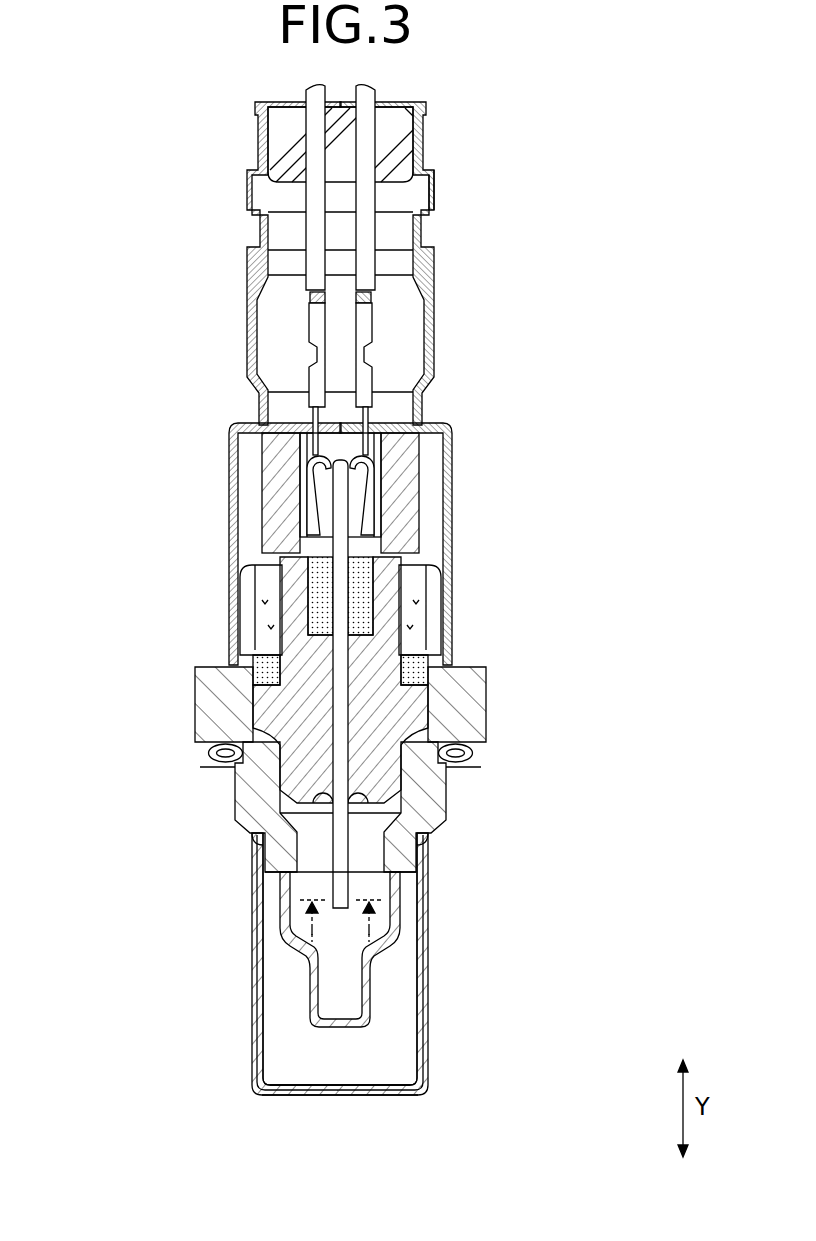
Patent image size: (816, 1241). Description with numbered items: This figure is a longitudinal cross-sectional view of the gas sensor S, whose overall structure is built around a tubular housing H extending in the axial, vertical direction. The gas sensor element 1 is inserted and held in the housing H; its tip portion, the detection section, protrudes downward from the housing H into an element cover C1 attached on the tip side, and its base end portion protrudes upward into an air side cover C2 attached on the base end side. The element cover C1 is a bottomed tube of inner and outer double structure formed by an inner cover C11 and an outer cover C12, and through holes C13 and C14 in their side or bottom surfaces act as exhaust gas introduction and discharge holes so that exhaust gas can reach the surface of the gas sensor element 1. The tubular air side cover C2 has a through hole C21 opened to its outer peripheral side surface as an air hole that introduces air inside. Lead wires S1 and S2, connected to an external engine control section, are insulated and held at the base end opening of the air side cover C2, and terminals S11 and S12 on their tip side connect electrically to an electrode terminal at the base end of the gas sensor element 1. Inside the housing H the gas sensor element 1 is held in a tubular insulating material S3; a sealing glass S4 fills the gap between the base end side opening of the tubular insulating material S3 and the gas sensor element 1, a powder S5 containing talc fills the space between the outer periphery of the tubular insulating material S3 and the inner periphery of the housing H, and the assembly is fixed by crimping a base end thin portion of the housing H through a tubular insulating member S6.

The gas sensor element 1 is at (340, 857).
The gas sensor S is at (483, 298).
The lead wire S1 is at (320, 188).
The lead wire S2 is at (363, 262).
The tubular insulating material S3 is at (305, 688).
The sealing glass S4 is at (360, 580).
The powder S5 is at (415, 678).
The tubular insulating member S6 is at (430, 605).
The terminal S11 is at (313, 483).
The spring contact terminal S12 is at (362, 505).
The housing H is at (470, 705).
The element cover C1 is at (572, 972).
The inner cover C11 is at (427, 980).
The outer cover C12 is at (427, 1017).
The through hole C13 is at (343, 1023).
The through hole C14 is at (283, 1093).
The air side cover C2 is at (432, 330).
The through hole C21 is at (434, 183).